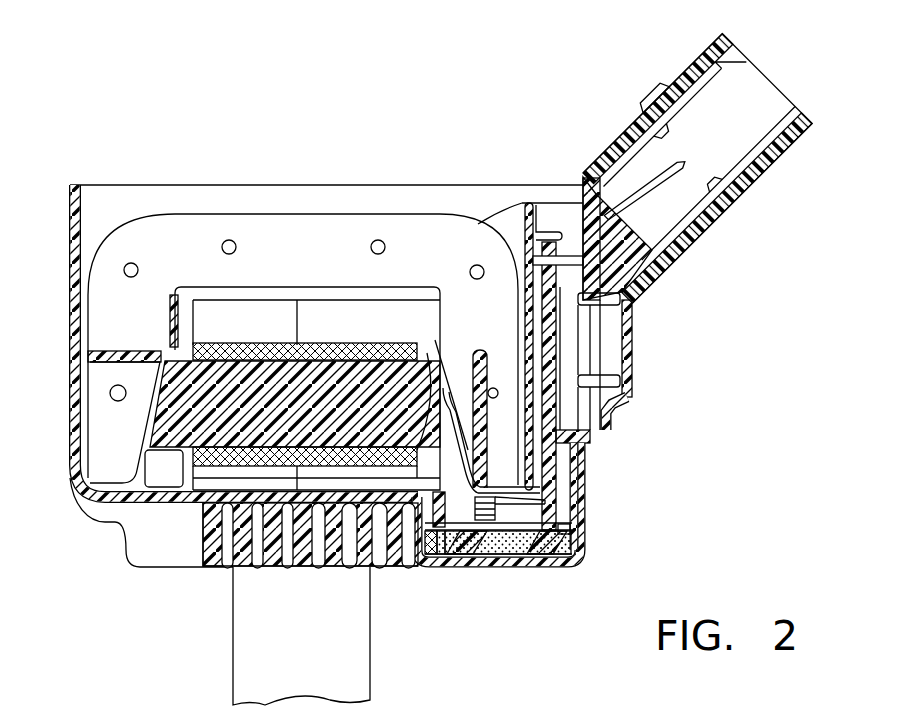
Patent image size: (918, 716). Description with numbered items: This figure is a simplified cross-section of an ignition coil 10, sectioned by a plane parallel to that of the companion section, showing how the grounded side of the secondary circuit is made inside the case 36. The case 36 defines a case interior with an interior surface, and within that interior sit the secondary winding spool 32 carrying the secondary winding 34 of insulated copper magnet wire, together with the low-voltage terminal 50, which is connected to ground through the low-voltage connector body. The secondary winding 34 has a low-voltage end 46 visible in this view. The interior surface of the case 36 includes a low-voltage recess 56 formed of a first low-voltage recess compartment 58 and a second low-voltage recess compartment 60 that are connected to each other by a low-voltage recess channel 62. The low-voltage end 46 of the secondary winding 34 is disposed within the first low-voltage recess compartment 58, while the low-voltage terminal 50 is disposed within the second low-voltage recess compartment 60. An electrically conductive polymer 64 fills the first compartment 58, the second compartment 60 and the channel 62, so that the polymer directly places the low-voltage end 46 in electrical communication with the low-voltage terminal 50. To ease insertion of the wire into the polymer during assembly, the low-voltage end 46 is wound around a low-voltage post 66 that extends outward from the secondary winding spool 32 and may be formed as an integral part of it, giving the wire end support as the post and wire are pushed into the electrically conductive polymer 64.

The ignition coil 10 is at (88, 108).
The case 36 is at (72, 232).
The secondary winding spool 32 is at (175, 437).
The secondary winding 34 is at (213, 463).
The low-voltage end 46 is at (470, 547).
The low-voltage terminal 50 is at (570, 559).
The low-voltage recess 56 is at (530, 552).
The first low-voltage recess compartment 58 is at (433, 557).
The second low-voltage recess compartment 60 is at (574, 530).
The low-voltage recess channel 62 is at (500, 552).
The electrically conductive polymer 64 is at (458, 550).
The low-voltage post 66 is at (447, 555).